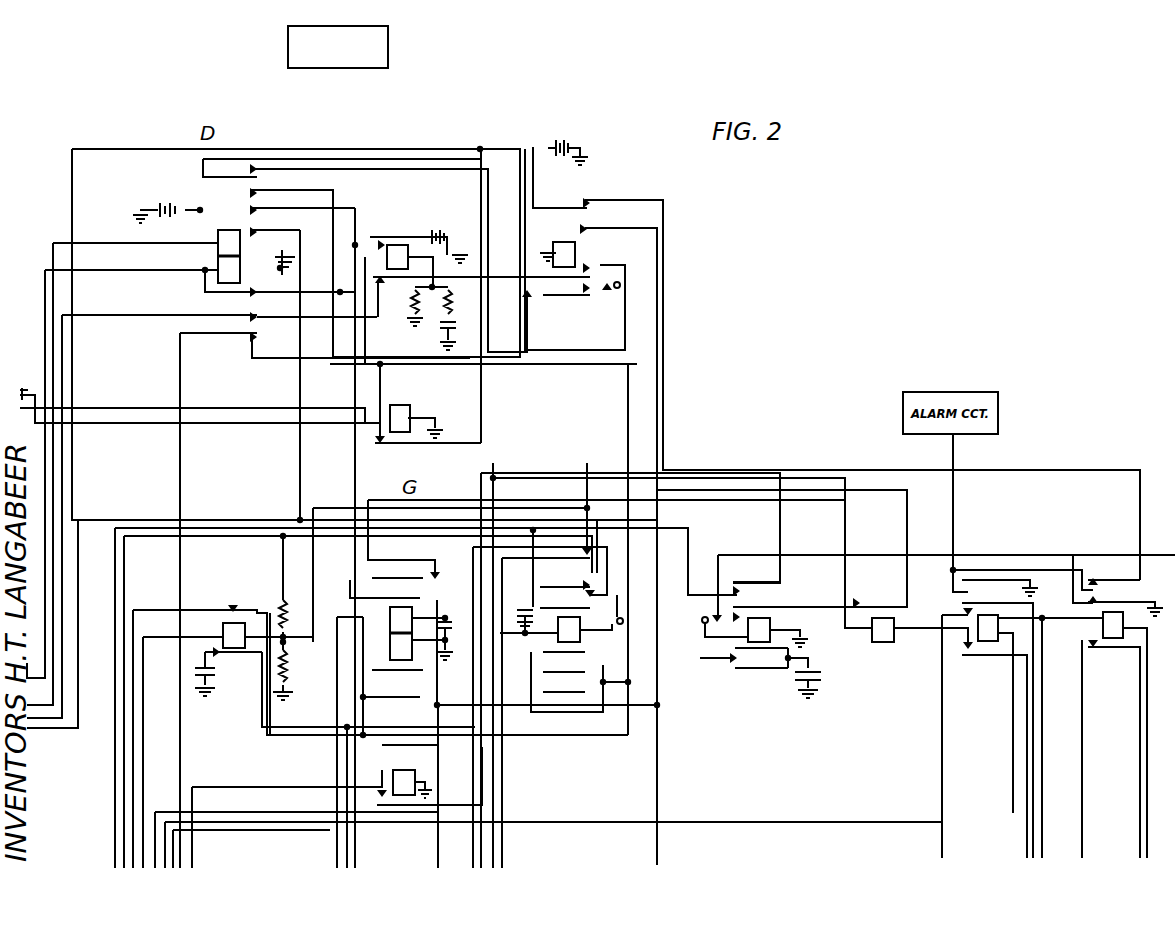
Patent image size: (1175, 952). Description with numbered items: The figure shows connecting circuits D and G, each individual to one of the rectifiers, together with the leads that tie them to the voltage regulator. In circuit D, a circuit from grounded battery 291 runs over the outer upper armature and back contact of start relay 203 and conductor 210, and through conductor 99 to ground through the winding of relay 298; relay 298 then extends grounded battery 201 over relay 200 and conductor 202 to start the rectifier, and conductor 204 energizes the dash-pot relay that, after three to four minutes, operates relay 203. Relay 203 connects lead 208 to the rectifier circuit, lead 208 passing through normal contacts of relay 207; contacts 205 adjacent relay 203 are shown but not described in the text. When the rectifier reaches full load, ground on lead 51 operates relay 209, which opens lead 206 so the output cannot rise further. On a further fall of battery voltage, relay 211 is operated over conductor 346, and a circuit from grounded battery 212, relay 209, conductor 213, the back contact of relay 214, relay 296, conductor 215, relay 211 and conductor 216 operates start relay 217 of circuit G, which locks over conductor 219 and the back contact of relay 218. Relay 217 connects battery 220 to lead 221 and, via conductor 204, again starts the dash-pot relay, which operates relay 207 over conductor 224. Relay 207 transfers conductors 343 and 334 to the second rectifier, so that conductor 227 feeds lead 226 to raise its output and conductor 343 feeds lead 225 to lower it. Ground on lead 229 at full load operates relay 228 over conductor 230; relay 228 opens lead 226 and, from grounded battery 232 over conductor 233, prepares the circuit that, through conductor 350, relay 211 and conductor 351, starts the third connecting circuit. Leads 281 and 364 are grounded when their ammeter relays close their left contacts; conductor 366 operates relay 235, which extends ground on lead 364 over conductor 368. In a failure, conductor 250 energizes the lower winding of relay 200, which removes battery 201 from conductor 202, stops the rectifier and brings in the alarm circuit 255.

The alarm circuit 255 is at (388, 52).
The grounded battery 291 is at (566, 140).
The grounded battery 201 is at (182, 186).
The relay 200 is at (218, 250).
The relay 209 is at (398, 245).
The grounded battery 212 is at (451, 220).
The start relay 203 is at (553, 250).
The contacts 205 is at (553, 312).
The relay 298 is at (410, 414).
The lead 208 is at (627, 414).
The conductor 213 is at (356, 460).
The conductor 224 is at (514, 478).
The conductor 215 is at (724, 470).
The conductor 219 is at (812, 490).
The conductor 216 is at (790, 555).
The start relay 217 is at (770, 626).
The relay 218 is at (872, 640).
The battery 220 is at (795, 684).
The relay 235 is at (990, 641).
The relay 211 is at (1103, 628).
The conductor 99 is at (21, 395).
The lead 51 is at (136, 400).
The conductor 202 is at (72, 452).
The lead 206 is at (62, 480).
The conductor 210 is at (202, 520).
The conductor 230 is at (283, 550).
The relay 228 is at (240, 605).
The conductor 250 is at (54, 645).
The grounded battery 232 is at (215, 680).
The conductor 227 is at (305, 727).
The conductor 233 is at (264, 737).
The relay 214 is at (390, 630).
The relay 207 is at (580, 638).
The lead 221 is at (122, 736).
The lead 225 is at (120, 761).
The lead 226 is at (128, 787).
The lead 229 is at (140, 808).
The lead 281 is at (266, 832).
The relay 296 is at (404, 770).
The conductor 334 is at (515, 775).
The conductor 343 is at (508, 843).
The conductor 204 is at (660, 762).
The lead 364 is at (942, 843).
The conductor 366 is at (1025, 760).
The conductor 346 is at (1042, 800).
The conductor 368 is at (1036, 843).
The conductor 351 is at (1147, 722).
The conductor 350 is at (1084, 812).